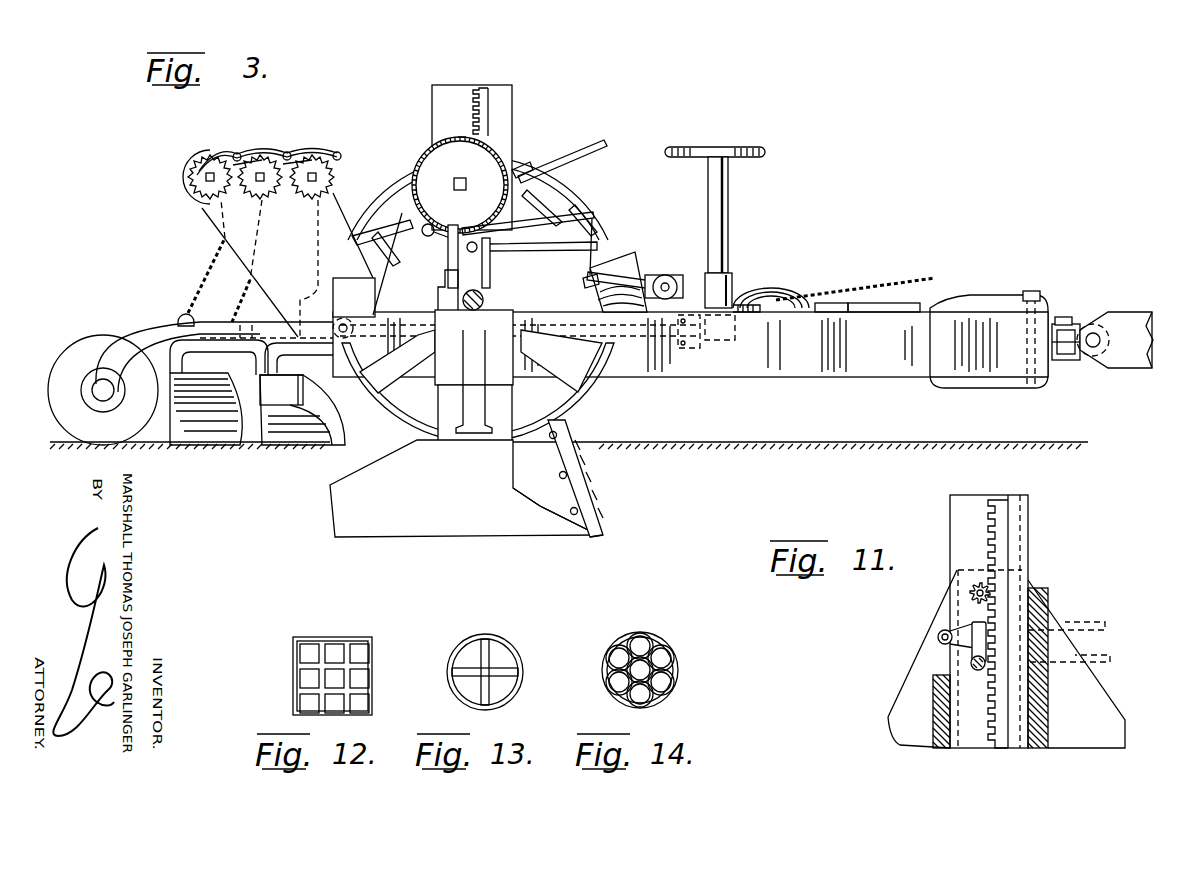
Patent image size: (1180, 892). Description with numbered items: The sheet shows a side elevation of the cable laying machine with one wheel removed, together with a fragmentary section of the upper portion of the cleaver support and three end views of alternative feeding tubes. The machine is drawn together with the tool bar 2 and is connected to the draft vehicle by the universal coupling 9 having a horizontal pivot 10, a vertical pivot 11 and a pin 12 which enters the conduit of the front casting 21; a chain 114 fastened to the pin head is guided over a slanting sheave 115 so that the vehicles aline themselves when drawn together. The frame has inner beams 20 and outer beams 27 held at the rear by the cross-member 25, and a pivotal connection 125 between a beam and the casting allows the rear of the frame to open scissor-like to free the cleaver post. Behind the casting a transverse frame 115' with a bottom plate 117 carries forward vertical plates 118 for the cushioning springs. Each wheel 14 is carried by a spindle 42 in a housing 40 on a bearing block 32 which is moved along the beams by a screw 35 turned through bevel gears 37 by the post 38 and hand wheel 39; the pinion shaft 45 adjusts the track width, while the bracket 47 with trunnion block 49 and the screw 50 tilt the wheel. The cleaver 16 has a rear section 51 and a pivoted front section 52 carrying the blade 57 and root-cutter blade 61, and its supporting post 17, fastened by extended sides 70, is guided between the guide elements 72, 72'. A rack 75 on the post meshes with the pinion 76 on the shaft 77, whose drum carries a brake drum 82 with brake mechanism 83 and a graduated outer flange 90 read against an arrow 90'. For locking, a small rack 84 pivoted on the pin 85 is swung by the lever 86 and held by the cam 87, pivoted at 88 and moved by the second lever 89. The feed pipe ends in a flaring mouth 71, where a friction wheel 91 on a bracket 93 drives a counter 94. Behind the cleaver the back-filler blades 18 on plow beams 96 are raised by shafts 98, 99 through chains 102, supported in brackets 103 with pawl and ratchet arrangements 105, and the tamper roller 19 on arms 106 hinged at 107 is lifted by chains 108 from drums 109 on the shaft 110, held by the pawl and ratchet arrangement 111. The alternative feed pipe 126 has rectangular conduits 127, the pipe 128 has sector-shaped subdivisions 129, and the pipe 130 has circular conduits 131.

In FIG. 3, the tool bar 2 is at (1130, 368).
In FIG. 3, the universal coupling 9 is at (1124, 298).
In FIG. 3, the horizontal pivot 10 is at (1096, 350).
In FIG. 3, the vertical pivot 11 is at (1076, 320).
In FIG. 3, the pin 12 is at (1064, 322).
In FIG. 3, the wheels 14 is at (392, 192).
In FIG. 3, the cleaver 16 is at (606, 484).
In FIG. 3, the supporting post 17 is at (528, 86).
In FIG. 11, the supporting post 17 is at (963, 500).
In FIG. 3, the back-filler blades 18 is at (305, 447).
In FIG. 3, the tamper roller 19 is at (82, 345).
In FIG. 3, the longitudinal inner beams 20 is at (906, 370).
In FIG. 3, the casting 21 is at (984, 297).
In FIG. 3, the cross-member 25 is at (350, 280).
In FIG. 3, the outer beams 27 is at (719, 377).
In FIG. 3, the bearing blocks 32 is at (504, 376).
In FIG. 3, the screw 35 is at (582, 322).
In FIG. 3, the bevel gears 37 is at (708, 332).
In FIG. 3, the post 38 is at (728, 222).
In FIG. 3, the hand wheel 39 is at (753, 148).
In FIG. 3, the housing 40 is at (438, 299).
In FIG. 3, the spindle 42 is at (484, 299).
In FIG. 3, the pinion shaft 45 is at (448, 259).
In FIG. 3, the bracket 47 is at (492, 278).
In FIG. 3, the trunnion block 49 is at (492, 245).
In FIG. 3, the screw 50 is at (466, 247).
In FIG. 3, the rear cleaver section 51 is at (342, 503).
In FIG. 3, the front cleaver section 52 is at (578, 457).
In FIG. 3, the blade 57 is at (606, 532).
In FIG. 3, the root-cutter blade 61 is at (586, 495).
In FIG. 3, the extended sides 70 is at (456, 448).
In FIG. 3, the flaring mouth 71 is at (640, 264).
In FIG. 3, the guide element 72 is at (562, 166).
In FIG. 11, the guide element 72' is at (995, 659).
In FIG. 3, the rack 75 is at (483, 88).
In FIG. 11, the rack 75 is at (1000, 500).
In FIG. 11, the pinion 76 is at (972, 586).
In FIG. 3, the pinion shaft 77 is at (461, 191).
In FIG. 11, the pinion shaft 77 is at (976, 595).
In FIG. 3, the brake drum 82 is at (420, 163).
In FIG. 3, the brake mechanism 83 is at (526, 170).
In FIG. 11, the small rack 84 is at (972, 645).
In FIG. 11, the pin 85 is at (978, 671).
In FIG. 3, the lever 86 is at (592, 252).
In FIG. 11, the lever 86 is at (1098, 660).
In FIG. 11, the cam 87 is at (955, 631).
In FIG. 3, the cam pivot 88 is at (422, 229).
In FIG. 11, the cam pivot 88 is at (938, 636).
In FIG. 3, the second lever 89 is at (586, 218).
In FIG. 11, the second lever 89 is at (1080, 625).
In FIG. 3, the outer flange 90 is at (453, 176).
In FIG. 3, the arrow 90' is at (452, 118).
In FIG. 3, the friction wheel 91 is at (664, 280).
In FIG. 3, the bracket 93 is at (584, 284).
In FIG. 3, the counter 94 is at (678, 278).
In FIG. 3, the plow beams 96 is at (226, 356).
In FIG. 3, the shaft 98 is at (262, 196).
In FIG. 3, the shaft 99 is at (312, 196).
In FIG. 3, the chains 102 is at (245, 290).
In FIG. 3, the brackets 103 is at (205, 212).
In FIG. 3, the pawl and ratchet arrangements 105 is at (262, 162).
In FIG. 3, the arms 106 is at (137, 340).
In FIG. 3, the hinge 107 is at (345, 322).
In FIG. 3, the chains 108 is at (194, 292).
In FIG. 3, the drums 109 is at (196, 162).
In FIG. 3, the shaft 110 is at (214, 160).
In FIG. 3, the pawl and ratchet arrangement 111 is at (198, 190).
In FIG. 3, the chain 114 is at (906, 285).
In FIG. 3, the sheave 115 is at (771, 284).
In FIG. 3, the transverse frame 115' is at (833, 284).
In FIG. 3, the bottom plate 117 is at (835, 378).
In FIG. 3, the vertical plates 118 is at (890, 303).
In FIG. 3, the pivotal connection 125 is at (1032, 292).
In FIG. 12, the feed pipe 126 is at (373, 650).
In FIG. 12, the rectangular conduits 127 is at (356, 648).
In FIG. 13, the feed pipe 128 is at (497, 657).
In FIG. 13, the sector-shaped subdivisions 129 is at (498, 648).
In FIG. 14, the feed pipe 130 is at (672, 645).
In FIG. 14, the circular conduits 131 is at (640, 644).